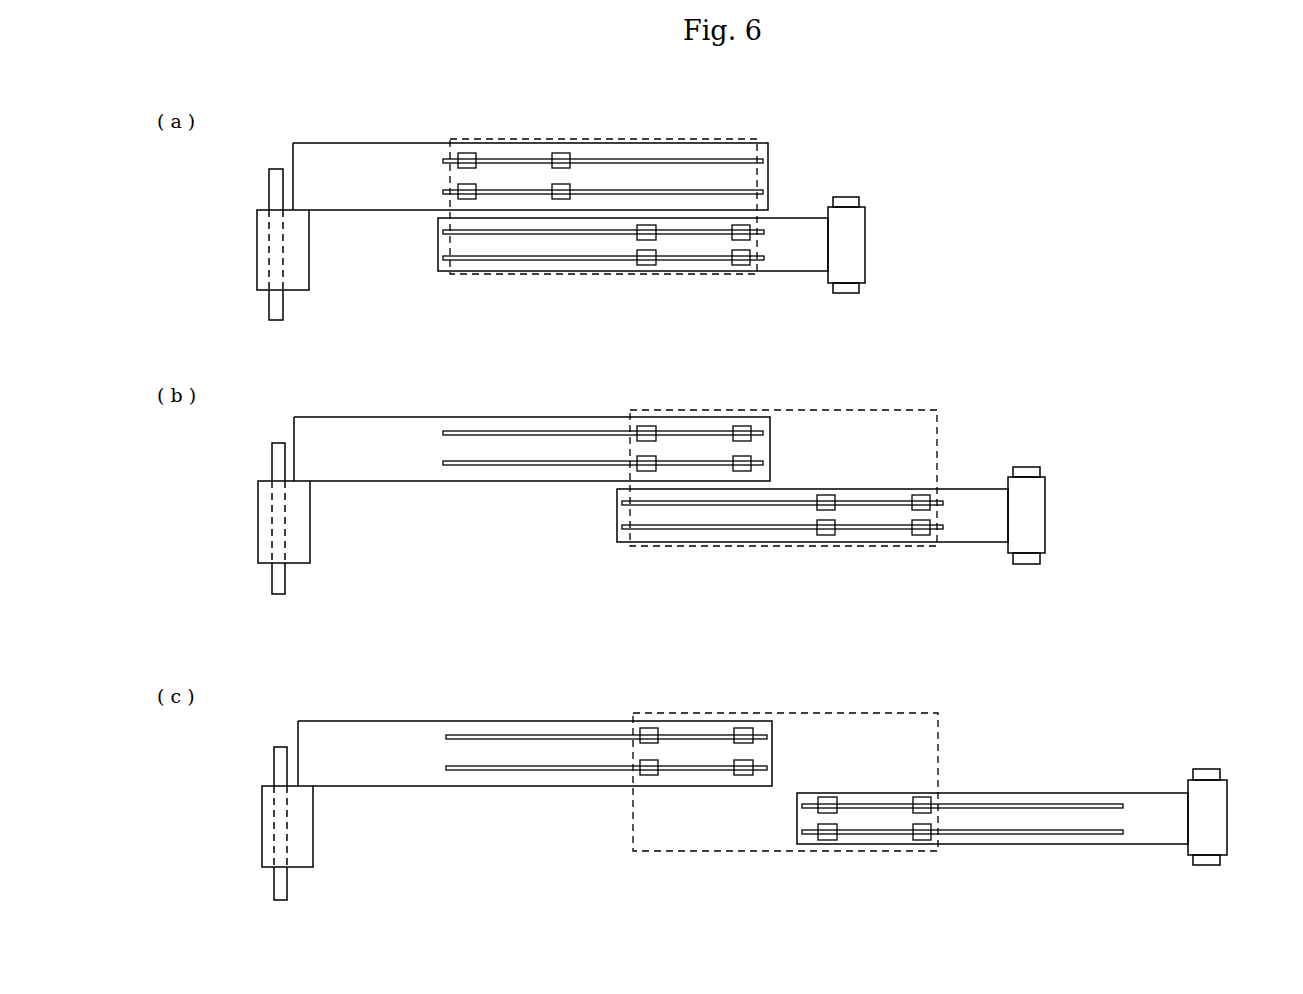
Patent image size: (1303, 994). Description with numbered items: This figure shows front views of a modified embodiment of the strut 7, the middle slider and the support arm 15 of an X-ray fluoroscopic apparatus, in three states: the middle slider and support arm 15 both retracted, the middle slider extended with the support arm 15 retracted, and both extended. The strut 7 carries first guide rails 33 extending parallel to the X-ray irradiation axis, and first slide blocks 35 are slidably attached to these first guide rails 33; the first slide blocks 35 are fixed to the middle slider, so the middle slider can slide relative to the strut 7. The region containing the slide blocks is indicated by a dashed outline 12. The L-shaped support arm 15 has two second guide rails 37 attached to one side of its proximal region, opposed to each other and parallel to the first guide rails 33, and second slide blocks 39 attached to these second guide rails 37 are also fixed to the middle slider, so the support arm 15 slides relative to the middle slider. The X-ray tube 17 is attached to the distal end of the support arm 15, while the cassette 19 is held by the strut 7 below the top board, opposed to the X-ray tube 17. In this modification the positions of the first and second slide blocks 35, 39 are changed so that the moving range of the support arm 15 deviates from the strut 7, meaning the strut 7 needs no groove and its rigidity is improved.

The strut 7 is at (308, 143).
The connector region 12 is at (750, 138).
The support arm 15 is at (785, 218).
The X-ray tube 17 is at (843, 197).
The cassette 19 is at (284, 306).
The first guide rails 33 is at (443, 190).
The first slide blocks 35 is at (475, 167).
The second guide rails 37 is at (443, 256).
The second slide blocks 39 is at (656, 239).